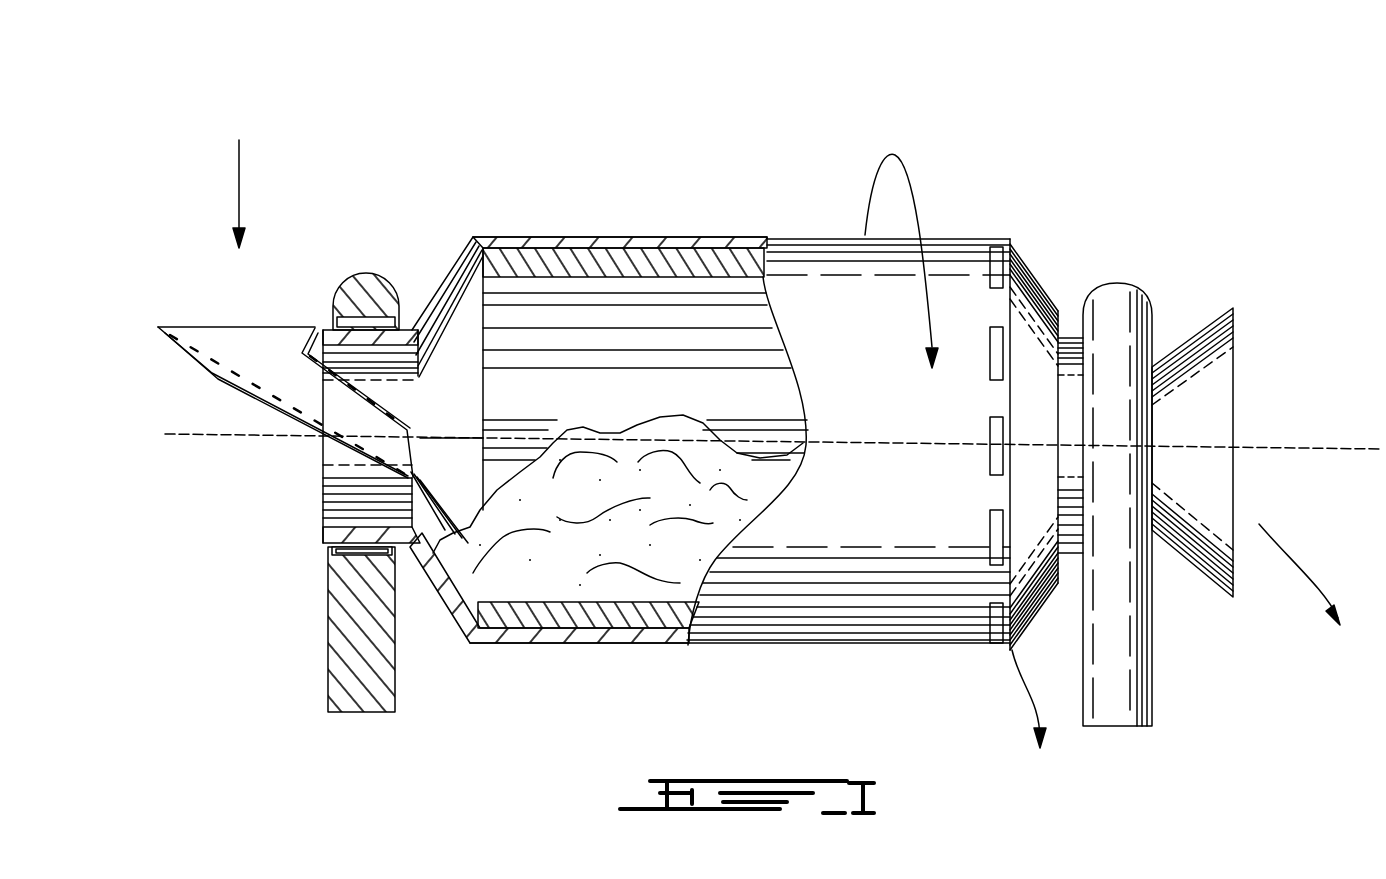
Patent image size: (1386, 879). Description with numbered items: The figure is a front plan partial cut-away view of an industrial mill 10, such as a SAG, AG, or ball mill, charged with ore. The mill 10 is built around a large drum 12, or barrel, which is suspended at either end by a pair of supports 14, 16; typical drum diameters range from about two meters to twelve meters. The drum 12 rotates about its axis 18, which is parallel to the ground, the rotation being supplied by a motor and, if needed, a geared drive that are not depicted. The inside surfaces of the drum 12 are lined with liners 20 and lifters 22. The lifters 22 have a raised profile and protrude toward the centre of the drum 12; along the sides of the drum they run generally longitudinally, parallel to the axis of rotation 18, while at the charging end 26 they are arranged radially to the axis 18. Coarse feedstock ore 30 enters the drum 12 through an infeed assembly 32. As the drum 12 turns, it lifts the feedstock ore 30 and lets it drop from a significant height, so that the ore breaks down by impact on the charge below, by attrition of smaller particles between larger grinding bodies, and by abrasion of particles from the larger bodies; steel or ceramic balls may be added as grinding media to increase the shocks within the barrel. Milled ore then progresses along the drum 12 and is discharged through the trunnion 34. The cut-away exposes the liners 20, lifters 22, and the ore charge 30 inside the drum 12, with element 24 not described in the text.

The mill 10 is at (978, 170).
The drum 12 is at (843, 350).
The support 14 is at (358, 272).
The support 16 is at (1128, 285).
The axis 18 is at (1298, 437).
The liners 20 is at (580, 398).
The lifters 22 is at (678, 363).
The bottom wall 24 is at (598, 645).
The charging end 26 is at (450, 603).
The feedstock ore 30 is at (530, 497).
The infeed assembly 32 is at (227, 353).
The trunnion 34 is at (1236, 383).